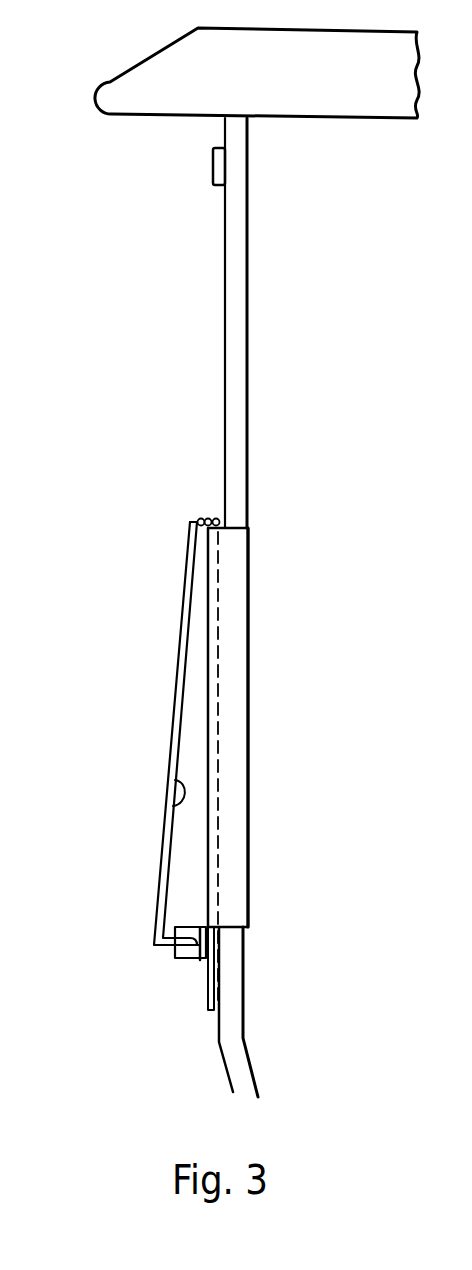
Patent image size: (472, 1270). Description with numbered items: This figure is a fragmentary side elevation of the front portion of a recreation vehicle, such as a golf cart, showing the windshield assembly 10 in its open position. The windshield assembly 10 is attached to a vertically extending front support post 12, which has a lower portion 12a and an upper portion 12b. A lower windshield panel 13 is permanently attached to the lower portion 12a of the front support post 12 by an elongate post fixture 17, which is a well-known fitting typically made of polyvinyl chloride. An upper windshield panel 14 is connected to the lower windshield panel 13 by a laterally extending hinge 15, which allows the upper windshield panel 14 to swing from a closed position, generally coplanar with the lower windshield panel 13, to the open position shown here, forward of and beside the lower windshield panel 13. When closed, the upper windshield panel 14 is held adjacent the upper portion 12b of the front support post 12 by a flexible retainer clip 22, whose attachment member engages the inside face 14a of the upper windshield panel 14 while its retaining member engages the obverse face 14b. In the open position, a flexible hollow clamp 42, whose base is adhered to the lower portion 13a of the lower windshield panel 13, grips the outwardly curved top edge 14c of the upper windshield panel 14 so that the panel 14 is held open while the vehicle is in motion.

The windshield assembly 10 is at (86, 275).
The front support post 12 is at (238, 505).
The lower portion of front support post 12a is at (250, 728).
The upper portion of front support post 12b is at (235, 265).
The lower windshield panel 13 is at (210, 623).
The lower portion of lower windshield panel 13a is at (208, 985).
The upper windshield panel 14 is at (180, 623).
The inside face of upper windshield panel 14a is at (170, 727).
The obverse face of upper windshield panel 14b is at (165, 812).
The outwardly curved top edge of upper windshield panel 14c is at (197, 958).
The hinge 15 is at (208, 517).
The post fixture 17 is at (230, 800).
The retainer clip 22 is at (213, 173).
The clamp 42 is at (200, 960).